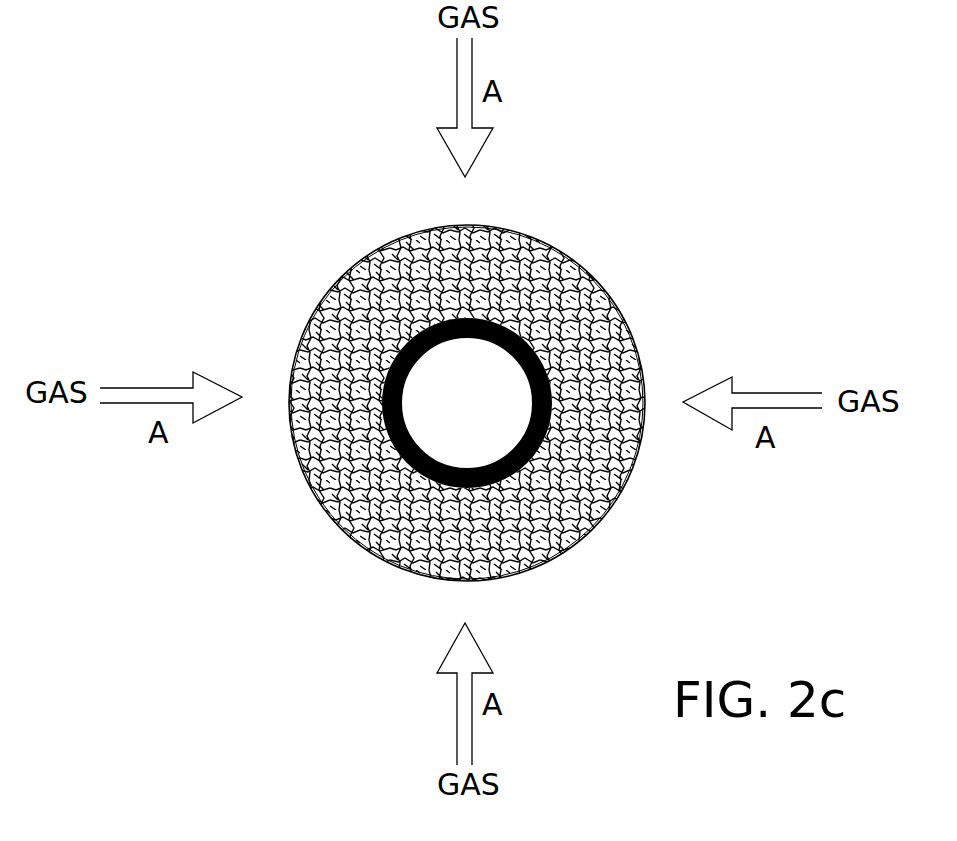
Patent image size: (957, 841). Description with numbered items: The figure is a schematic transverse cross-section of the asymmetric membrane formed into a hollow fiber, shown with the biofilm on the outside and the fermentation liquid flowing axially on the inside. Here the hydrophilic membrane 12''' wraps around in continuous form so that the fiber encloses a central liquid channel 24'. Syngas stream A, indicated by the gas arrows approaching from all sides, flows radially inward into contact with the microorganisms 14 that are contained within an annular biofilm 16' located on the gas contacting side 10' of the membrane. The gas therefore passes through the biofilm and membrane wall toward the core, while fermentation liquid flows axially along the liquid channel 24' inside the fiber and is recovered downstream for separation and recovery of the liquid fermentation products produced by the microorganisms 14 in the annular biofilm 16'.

The gas contacting side 10' is at (547, 405).
The hydrophilic membrane 12''' is at (467, 403).
The microorganisms 14 is at (590, 292).
The annular biofilm 16' is at (547, 403).
The liquid channel 24' is at (467, 384).